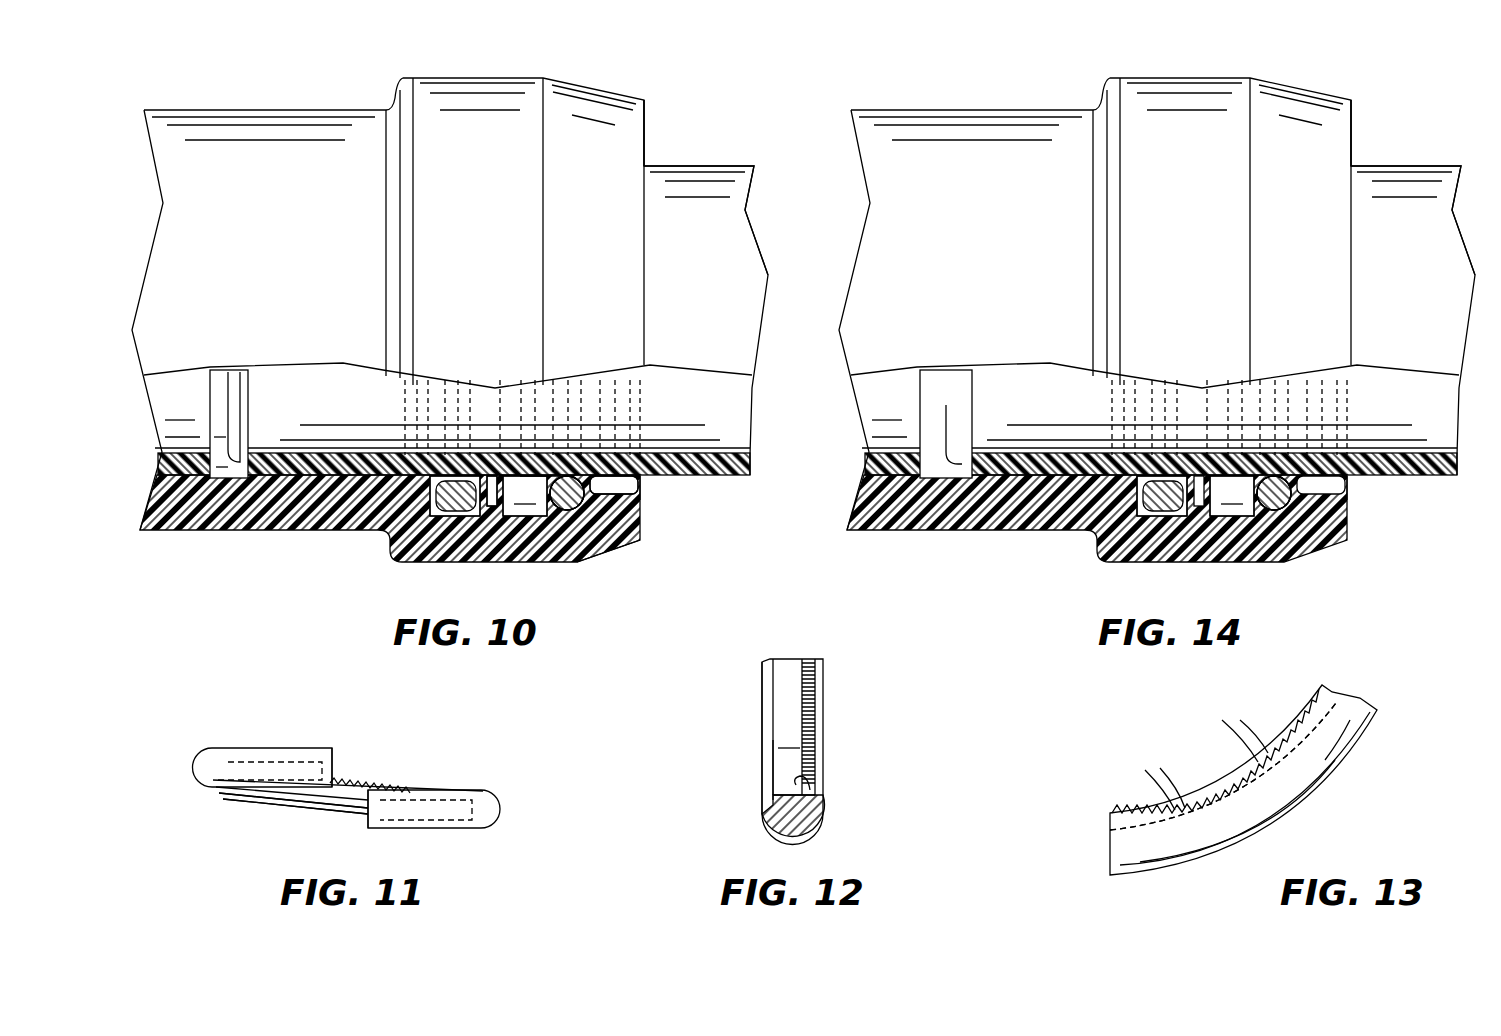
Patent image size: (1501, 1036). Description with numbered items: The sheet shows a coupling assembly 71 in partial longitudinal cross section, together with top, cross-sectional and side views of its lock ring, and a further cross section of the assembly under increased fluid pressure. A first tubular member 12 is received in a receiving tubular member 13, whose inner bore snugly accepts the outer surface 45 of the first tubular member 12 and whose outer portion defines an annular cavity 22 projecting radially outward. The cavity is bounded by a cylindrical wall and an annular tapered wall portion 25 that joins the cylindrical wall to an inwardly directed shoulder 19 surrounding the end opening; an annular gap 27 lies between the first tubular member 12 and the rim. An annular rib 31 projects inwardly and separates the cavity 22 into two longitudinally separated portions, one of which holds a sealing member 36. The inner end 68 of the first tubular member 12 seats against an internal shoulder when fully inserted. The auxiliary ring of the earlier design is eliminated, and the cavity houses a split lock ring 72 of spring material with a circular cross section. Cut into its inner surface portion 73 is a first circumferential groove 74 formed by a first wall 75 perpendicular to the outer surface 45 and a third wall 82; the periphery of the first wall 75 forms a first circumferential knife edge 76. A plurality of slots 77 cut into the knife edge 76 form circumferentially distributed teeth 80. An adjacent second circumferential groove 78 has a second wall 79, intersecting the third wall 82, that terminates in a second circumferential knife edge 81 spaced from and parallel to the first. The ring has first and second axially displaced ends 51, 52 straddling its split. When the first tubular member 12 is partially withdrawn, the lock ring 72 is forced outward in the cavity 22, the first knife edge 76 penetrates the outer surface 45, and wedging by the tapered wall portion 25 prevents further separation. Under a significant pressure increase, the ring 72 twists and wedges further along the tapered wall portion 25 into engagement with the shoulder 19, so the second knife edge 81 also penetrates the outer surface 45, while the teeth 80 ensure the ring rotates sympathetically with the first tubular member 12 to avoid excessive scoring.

In FIG. 10, the first tubular member 12 is at (720, 166).
In FIG. 14, the first tubular member 12 is at (1427, 166).
In FIG. 10, the receiving tubular member 13 is at (580, 79).
In FIG. 14, the receiving tubular member 13 is at (1287, 79).
In FIG. 10, the shoulder 19 is at (640, 486).
In FIG. 10, the annular cavity 22 is at (525, 496).
In FIG. 14, the annular cavity 22 is at (1232, 496).
In FIG. 10, the annular tapered wall portion 25 is at (600, 548).
In FIG. 10, the annular gap 27 is at (641, 500).
In FIG. 14, the annular gap 27 is at (1348, 488).
In FIG. 10, the annular rib 31 is at (493, 455).
In FIG. 10, the sealing member 36 is at (452, 455).
In FIG. 14, the sealing member 36 is at (1160, 455).
In FIG. 10, the outer surface 45 is at (740, 478).
In FIG. 14, the outer surface 45 is at (1426, 478).
In FIG. 11, the first axially displaced end 51 is at (360, 800).
In FIG. 11, the second axially displaced end 52 is at (336, 752).
In FIG. 10, the inner end 68 is at (228, 430).
In FIG. 14, the inner end 68 is at (946, 424).
In FIG. 10, the coupling assembly 71 is at (672, 107).
In FIG. 14, the coupling assembly 71 is at (1380, 107).
In FIG. 10, the split lock ring 72 is at (520, 535).
In FIG. 11, the split lock ring 72 is at (228, 745).
In FIG. 12, the split lock ring 72 is at (762, 832).
In FIG. 13, the split lock ring 72 is at (1318, 790).
In FIG. 12, the inner surface portion 73 is at (818, 680).
In FIG. 12, the first circumferential groove 74 is at (787, 678).
In FIG. 12, the first wall 75 is at (805, 780).
In FIG. 10, the first circumferential knife edge 76 is at (577, 455).
In FIG. 14, the first circumferential knife edge 76 is at (1296, 470).
In FIG. 11, the first circumferential knife edge 76 is at (370, 776).
In FIG. 12, the first circumferential knife edge 76 is at (818, 725).
In FIG. 13, the first circumferential knife edge 76 is at (1290, 725).
In FIG. 13, the slots 77 is at (1150, 768).
In FIG. 12, the second circumferential groove 78 is at (770, 768).
In FIG. 12, the second wall 79 is at (770, 800).
In FIG. 13, the teeth 80 is at (1230, 720).
In FIG. 10, the second circumferential knife edge 81 is at (532, 472).
In FIG. 14, the second circumferential knife edge 81 is at (1284, 470).
In FIG. 11, the second circumferential knife edge 81 is at (318, 800).
In FIG. 12, the second circumferential knife edge 81 is at (770, 696).
In FIG. 13, the second circumferential knife edge 81 is at (1305, 697).
In FIG. 11, the third wall 82 is at (340, 798).
In FIG. 12, the third wall 82 is at (788, 738).